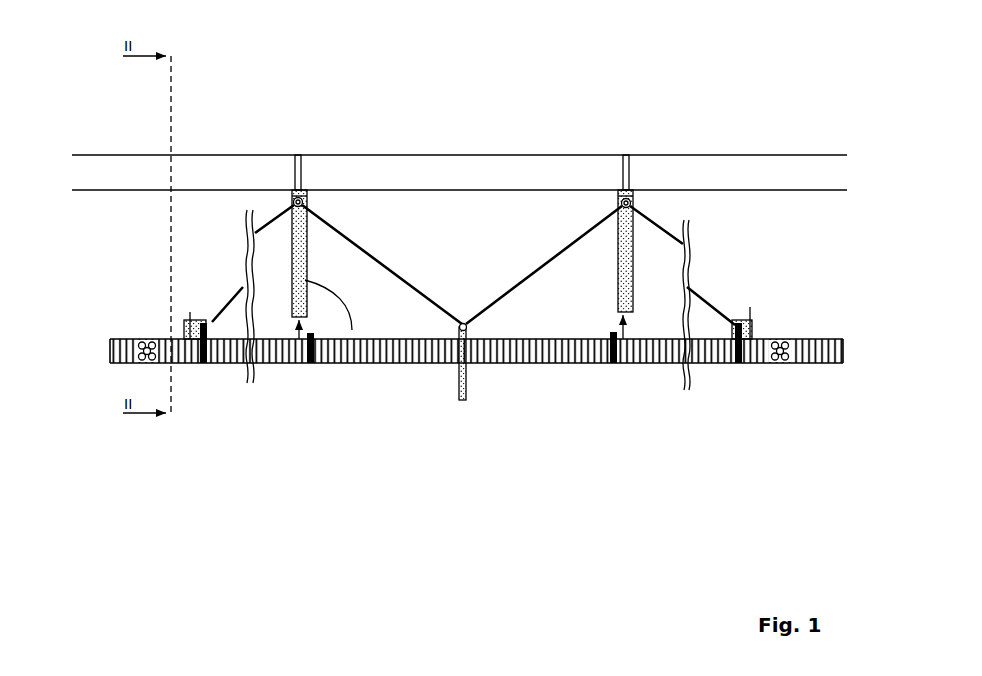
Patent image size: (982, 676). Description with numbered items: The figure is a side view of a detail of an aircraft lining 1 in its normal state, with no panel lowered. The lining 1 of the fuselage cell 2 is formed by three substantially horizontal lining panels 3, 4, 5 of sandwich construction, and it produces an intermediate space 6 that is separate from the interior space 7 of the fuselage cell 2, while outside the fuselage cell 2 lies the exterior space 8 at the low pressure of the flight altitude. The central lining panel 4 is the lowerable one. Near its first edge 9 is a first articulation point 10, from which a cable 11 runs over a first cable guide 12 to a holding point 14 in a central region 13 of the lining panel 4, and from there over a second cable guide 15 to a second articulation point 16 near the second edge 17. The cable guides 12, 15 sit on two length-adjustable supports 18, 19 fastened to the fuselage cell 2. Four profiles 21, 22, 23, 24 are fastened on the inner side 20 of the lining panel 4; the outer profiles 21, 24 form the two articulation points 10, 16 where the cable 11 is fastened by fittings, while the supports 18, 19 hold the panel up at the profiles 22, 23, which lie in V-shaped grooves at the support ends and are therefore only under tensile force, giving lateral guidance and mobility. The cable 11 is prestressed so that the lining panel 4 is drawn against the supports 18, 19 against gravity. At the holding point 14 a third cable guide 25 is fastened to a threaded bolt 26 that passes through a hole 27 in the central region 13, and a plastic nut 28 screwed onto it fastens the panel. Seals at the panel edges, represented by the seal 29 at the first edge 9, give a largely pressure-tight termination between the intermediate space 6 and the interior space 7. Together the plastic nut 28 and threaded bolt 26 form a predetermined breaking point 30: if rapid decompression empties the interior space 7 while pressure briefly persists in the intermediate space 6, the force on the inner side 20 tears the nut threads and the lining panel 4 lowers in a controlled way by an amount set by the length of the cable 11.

The lining 1 is at (807, 440).
The fuselage cell 2 is at (832, 183).
The lining panel 3 is at (127, 359).
The lining panel 4 is at (380, 364).
The lining panel 5 is at (837, 354).
The intermediate space 6 is at (832, 226).
The interior space 7 is at (829, 392).
The exterior space 8 is at (442, 82).
The first edge 9 is at (160, 318).
The first articulation point 10 is at (200, 318).
The cable 11 is at (255, 210).
The first cable guide 12 is at (292, 188).
The central region 13 is at (396, 314).
The holding point 14 is at (455, 313).
The second cable guide 15 is at (618, 195).
The second articulation point 16 is at (750, 308).
The second edge 17 is at (777, 325).
The support 18 is at (352, 330).
The support 19 is at (690, 250).
The inner side 20 is at (578, 335).
The profile 21 is at (198, 364).
The profile 22 is at (304, 364).
The profile 23 is at (640, 364).
The profile 24 is at (765, 364).
The third cable guide 25 is at (467, 323).
The threaded bolt 26 is at (459, 374).
The hole 27 is at (457, 368).
The plastic nut 28 is at (470, 368).
The seal 29 is at (152, 338).
The predetermined breaking point 30 is at (486, 368).